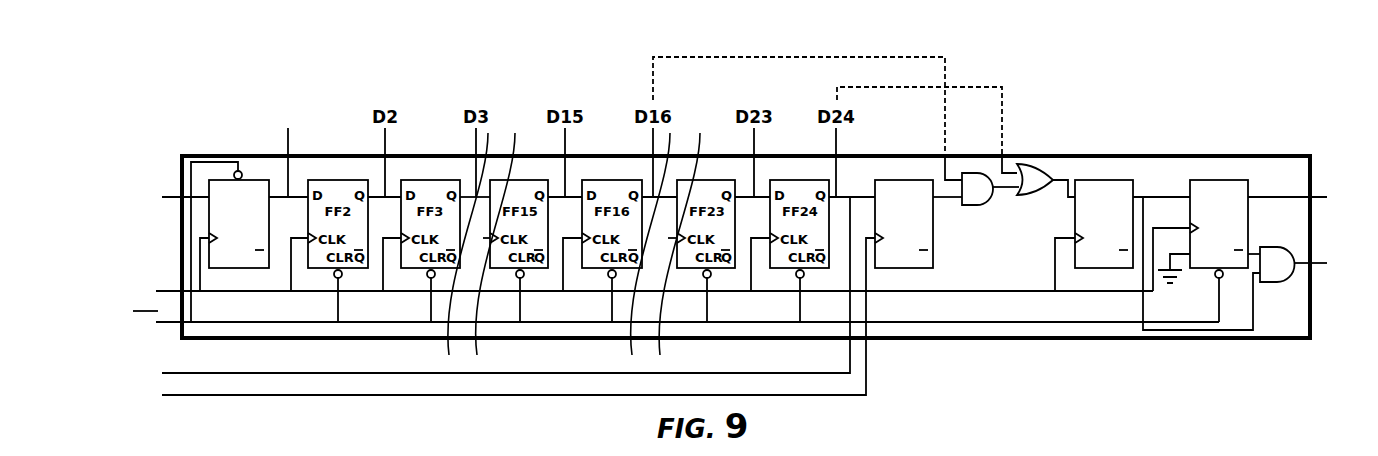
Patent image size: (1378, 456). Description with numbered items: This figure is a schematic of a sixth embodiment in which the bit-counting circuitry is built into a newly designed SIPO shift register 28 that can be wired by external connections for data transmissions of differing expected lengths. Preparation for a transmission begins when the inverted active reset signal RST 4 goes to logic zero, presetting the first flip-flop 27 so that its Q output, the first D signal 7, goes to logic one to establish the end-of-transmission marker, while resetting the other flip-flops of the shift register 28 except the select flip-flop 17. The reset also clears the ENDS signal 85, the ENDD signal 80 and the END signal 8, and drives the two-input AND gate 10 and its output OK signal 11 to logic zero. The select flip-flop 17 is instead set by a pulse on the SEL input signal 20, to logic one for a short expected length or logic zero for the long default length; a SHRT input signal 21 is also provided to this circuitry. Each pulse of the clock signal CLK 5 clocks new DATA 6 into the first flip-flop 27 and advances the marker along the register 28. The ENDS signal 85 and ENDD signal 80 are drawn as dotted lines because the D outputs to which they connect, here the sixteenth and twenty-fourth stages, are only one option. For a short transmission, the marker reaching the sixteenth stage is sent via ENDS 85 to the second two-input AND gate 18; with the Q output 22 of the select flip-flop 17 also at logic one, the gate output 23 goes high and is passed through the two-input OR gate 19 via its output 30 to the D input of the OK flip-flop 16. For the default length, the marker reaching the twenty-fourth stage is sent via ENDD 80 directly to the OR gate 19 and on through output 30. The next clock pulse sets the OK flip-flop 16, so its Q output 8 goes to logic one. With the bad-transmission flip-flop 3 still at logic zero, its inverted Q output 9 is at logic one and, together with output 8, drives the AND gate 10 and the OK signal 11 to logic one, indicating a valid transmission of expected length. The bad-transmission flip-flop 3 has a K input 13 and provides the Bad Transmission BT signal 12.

The Bad Transmission flip-flop FFBT 3 is at (1205, 178).
The inverted active reset signal RST 4 is at (174, 338).
The clock signal CLK 5 is at (176, 282).
The data input DATA 6 is at (178, 206).
The D1 signal 7 is at (296, 142).
The END signal 8 is at (1149, 194).
The OK control signal 9 is at (1254, 252).
The AND gate G1 10 is at (1276, 285).
The OK signal 11 is at (1301, 261).
The Bad Transmission (BT) signal 12 is at (1267, 195).
The FFBT K input 13 is at (1177, 250).
The flip-flop FFOK 16 is at (1125, 178).
The D-type flip-flop FFSEL 17 is at (885, 176).
The AND gate G2 18 is at (981, 210).
The OR gate G3 19 is at (1027, 161).
The input signal SEL 20 is at (345, 400).
The input signal SHRT 21 is at (277, 378).
The Q output of flip-flop FFSEL 22 is at (946, 202).
The output of AND gate G2 23 is at (1006, 193).
The flip-flop FF1 27 is at (254, 172).
The SIPO shift register 28 is at (1025, 342).
The output of OR gate G3 30 is at (1068, 191).
The ENDD signal 80 is at (974, 83).
The ENDS signal 85 is at (907, 55).